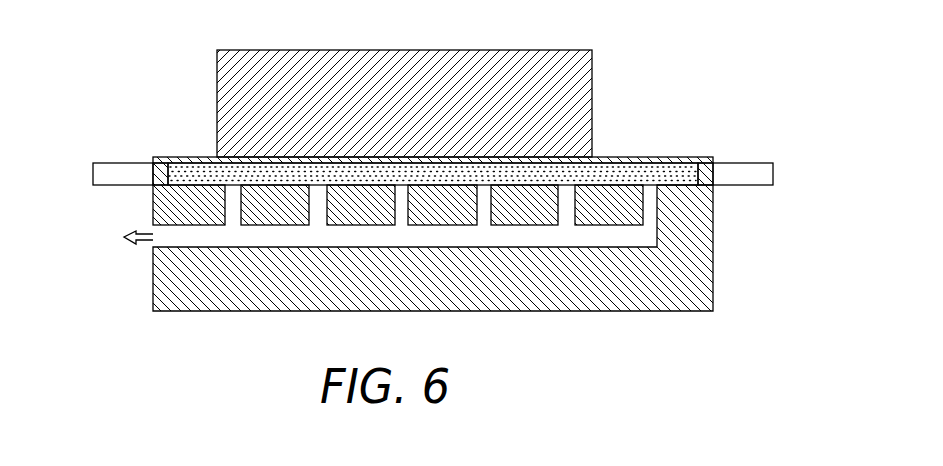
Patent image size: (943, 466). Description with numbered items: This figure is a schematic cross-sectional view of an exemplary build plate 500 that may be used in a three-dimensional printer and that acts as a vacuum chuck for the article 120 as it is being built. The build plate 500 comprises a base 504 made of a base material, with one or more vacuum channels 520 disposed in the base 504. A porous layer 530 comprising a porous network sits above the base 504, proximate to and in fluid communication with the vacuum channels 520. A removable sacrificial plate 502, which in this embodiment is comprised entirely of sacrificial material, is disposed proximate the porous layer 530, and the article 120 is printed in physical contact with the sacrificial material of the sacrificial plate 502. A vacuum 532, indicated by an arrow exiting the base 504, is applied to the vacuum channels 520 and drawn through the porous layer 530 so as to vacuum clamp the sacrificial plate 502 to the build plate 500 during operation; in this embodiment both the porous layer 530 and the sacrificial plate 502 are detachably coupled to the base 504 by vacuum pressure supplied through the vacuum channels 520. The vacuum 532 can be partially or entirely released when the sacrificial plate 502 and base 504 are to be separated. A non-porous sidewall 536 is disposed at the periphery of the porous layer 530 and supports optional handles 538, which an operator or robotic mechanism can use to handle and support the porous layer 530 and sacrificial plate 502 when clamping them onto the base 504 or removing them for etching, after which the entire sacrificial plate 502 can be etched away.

The build plate 500 is at (756, 114).
The article 120 is at (452, 50).
The sacrificial plate 502 is at (646, 157).
The non-porous sidewall 536 is at (158, 157).
The porous layer 530 is at (680, 178).
The handle 538 is at (110, 163).
The vacuum channels 520 is at (629, 236).
The base 504 is at (713, 275).
The vacuum 532 is at (150, 244).